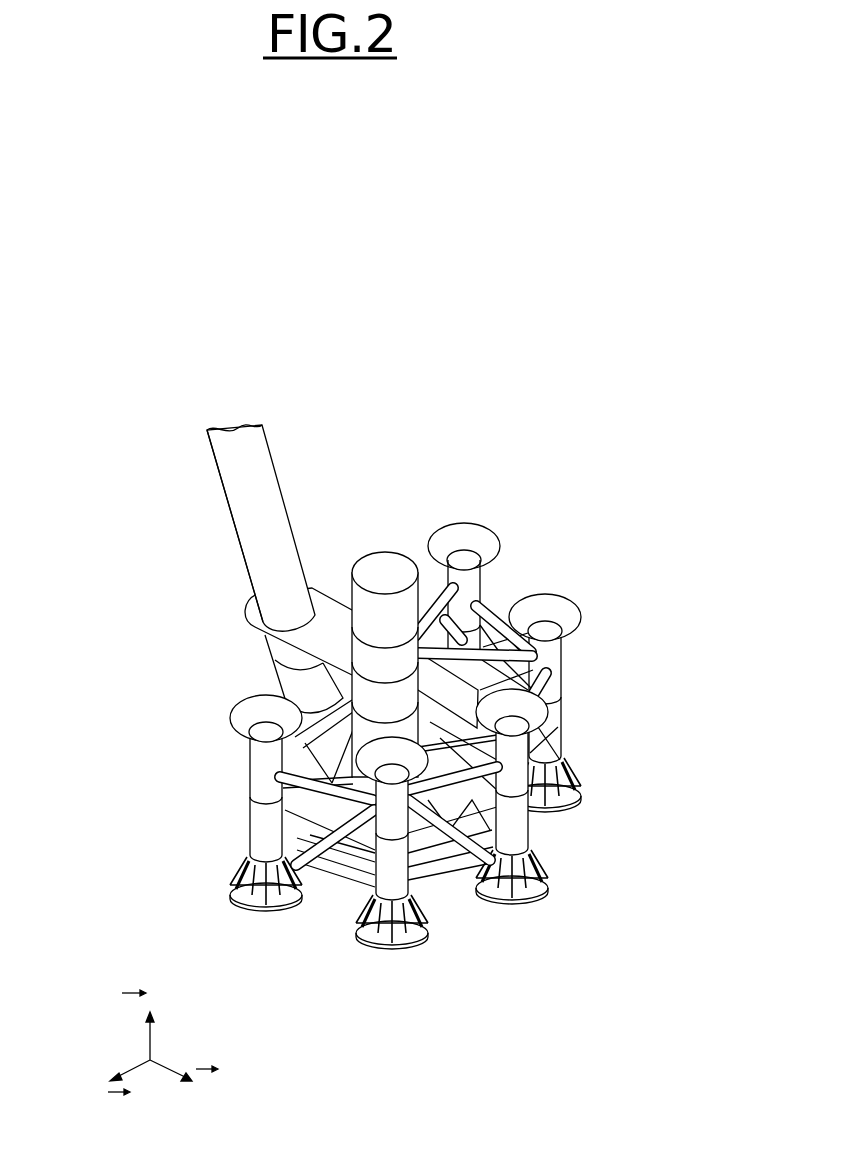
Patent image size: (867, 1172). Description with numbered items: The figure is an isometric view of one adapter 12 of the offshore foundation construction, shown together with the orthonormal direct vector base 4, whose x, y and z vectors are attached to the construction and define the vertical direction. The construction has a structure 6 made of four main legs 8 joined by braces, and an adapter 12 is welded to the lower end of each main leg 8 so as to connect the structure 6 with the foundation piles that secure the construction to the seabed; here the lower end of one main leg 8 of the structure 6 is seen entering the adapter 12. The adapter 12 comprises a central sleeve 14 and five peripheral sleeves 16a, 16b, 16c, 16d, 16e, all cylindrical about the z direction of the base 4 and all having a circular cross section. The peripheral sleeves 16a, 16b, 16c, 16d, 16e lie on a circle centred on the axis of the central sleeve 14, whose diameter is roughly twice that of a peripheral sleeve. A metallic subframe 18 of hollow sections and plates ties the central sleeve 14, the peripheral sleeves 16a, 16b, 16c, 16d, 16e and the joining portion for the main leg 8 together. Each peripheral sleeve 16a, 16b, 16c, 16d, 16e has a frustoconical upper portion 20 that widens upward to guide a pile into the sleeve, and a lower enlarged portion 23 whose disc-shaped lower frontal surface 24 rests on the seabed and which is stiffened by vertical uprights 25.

The orthonormal direct vector base 4 is at (83, 1119).
The structure 6 is at (261, 528).
The main leg 8 is at (228, 512).
The adapter 12 is at (433, 702).
The central sleeve 14 is at (381, 561).
The peripheral sleeve 16a is at (231, 816).
The peripheral sleeve 16b is at (384, 812).
The peripheral sleeve 16c is at (517, 766).
The peripheral sleeve 16d is at (551, 660).
The peripheral sleeve 16e is at (491, 557).
The metallic subframe 18 is at (322, 870).
The upper portion 20 is at (461, 523).
The lower enlarged portion 23 is at (229, 890).
The lower frontal surface 24 is at (252, 912).
The vertical upright 25 is at (241, 872).